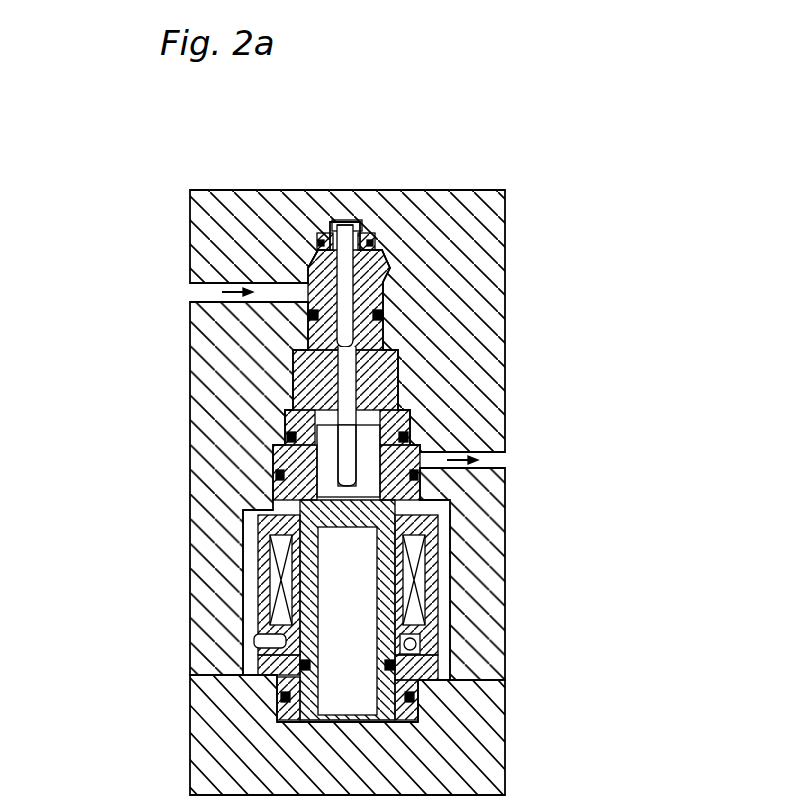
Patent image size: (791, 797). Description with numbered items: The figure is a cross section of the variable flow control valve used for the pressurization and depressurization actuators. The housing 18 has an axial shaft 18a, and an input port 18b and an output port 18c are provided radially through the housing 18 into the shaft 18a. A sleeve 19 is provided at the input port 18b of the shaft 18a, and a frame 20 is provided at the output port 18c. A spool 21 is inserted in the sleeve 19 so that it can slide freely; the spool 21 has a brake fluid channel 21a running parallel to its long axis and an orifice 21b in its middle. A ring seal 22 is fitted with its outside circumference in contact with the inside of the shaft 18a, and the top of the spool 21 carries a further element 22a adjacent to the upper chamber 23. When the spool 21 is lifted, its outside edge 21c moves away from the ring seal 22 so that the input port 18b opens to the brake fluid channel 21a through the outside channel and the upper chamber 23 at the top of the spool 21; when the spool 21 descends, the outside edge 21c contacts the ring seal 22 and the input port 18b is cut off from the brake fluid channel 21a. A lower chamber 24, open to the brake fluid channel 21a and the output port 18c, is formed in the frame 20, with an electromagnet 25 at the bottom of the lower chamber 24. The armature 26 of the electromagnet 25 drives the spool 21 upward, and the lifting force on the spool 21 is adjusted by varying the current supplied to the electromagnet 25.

The housing 18 is at (505, 289).
The axial shaft 18a is at (447, 528).
The input port 18b is at (190, 294).
The output port 18c is at (505, 462).
The sleeve 19 is at (385, 372).
The frame 20 is at (262, 598).
The spool 21 is at (300, 335).
The brake fluid channel 21a is at (355, 222).
The orifice 21b is at (305, 413).
The outside edge 21c is at (315, 262).
The ring seal 22 is at (318, 247).
The top cap 22a is at (365, 232).
The upper chamber 23 is at (342, 222).
The lower chamber 24 is at (278, 448).
The electromagnet 25 is at (425, 600).
The armature 26 is at (365, 565).